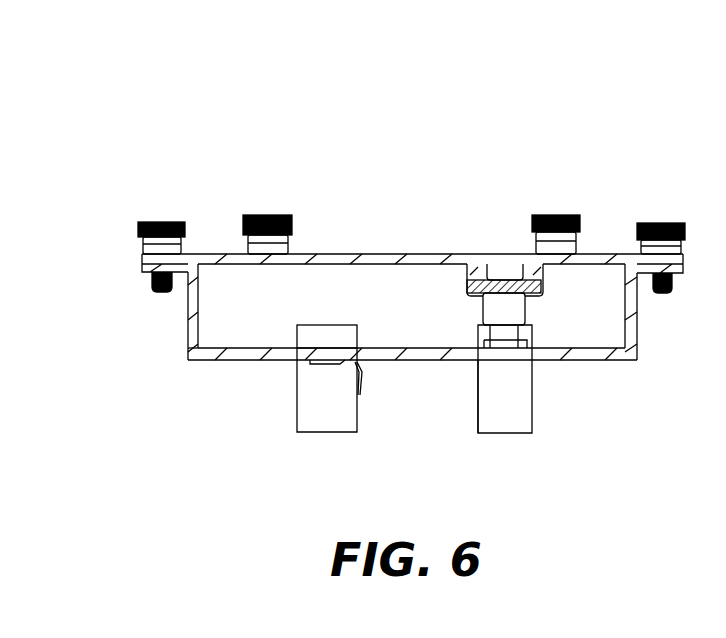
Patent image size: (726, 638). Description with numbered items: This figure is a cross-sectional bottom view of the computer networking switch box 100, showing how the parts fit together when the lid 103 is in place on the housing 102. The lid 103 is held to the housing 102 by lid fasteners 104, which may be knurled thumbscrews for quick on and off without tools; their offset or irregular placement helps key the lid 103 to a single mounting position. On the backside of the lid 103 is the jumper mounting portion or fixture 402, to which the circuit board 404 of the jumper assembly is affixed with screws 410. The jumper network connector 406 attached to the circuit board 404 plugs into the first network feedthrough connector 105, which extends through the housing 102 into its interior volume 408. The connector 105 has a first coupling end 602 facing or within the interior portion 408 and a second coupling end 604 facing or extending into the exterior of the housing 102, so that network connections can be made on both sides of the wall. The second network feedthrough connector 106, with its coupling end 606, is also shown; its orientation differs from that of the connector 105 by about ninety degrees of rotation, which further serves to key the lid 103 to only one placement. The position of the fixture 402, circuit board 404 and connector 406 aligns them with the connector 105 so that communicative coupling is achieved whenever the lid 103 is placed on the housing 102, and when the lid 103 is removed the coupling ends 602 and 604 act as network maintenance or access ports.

The switch box 100 is at (100, 114).
The housing 102 is at (190, 330).
The lid 103 is at (355, 255).
The lid fasteners 104 is at (258, 215).
The first network feedthrough connector 105 is at (533, 410).
The second network feedthrough connector 106 is at (297, 408).
The jumper mounting fixture 402 is at (466, 281).
The circuit board 404 is at (497, 278).
The jumper network connector 406 is at (518, 315).
The interior volume 408 is at (214, 334).
The screws 410 is at (538, 296).
The first coupling end 602 is at (475, 319).
The second coupling end 604 is at (479, 434).
The first coupling end of second connector 606 is at (294, 320).